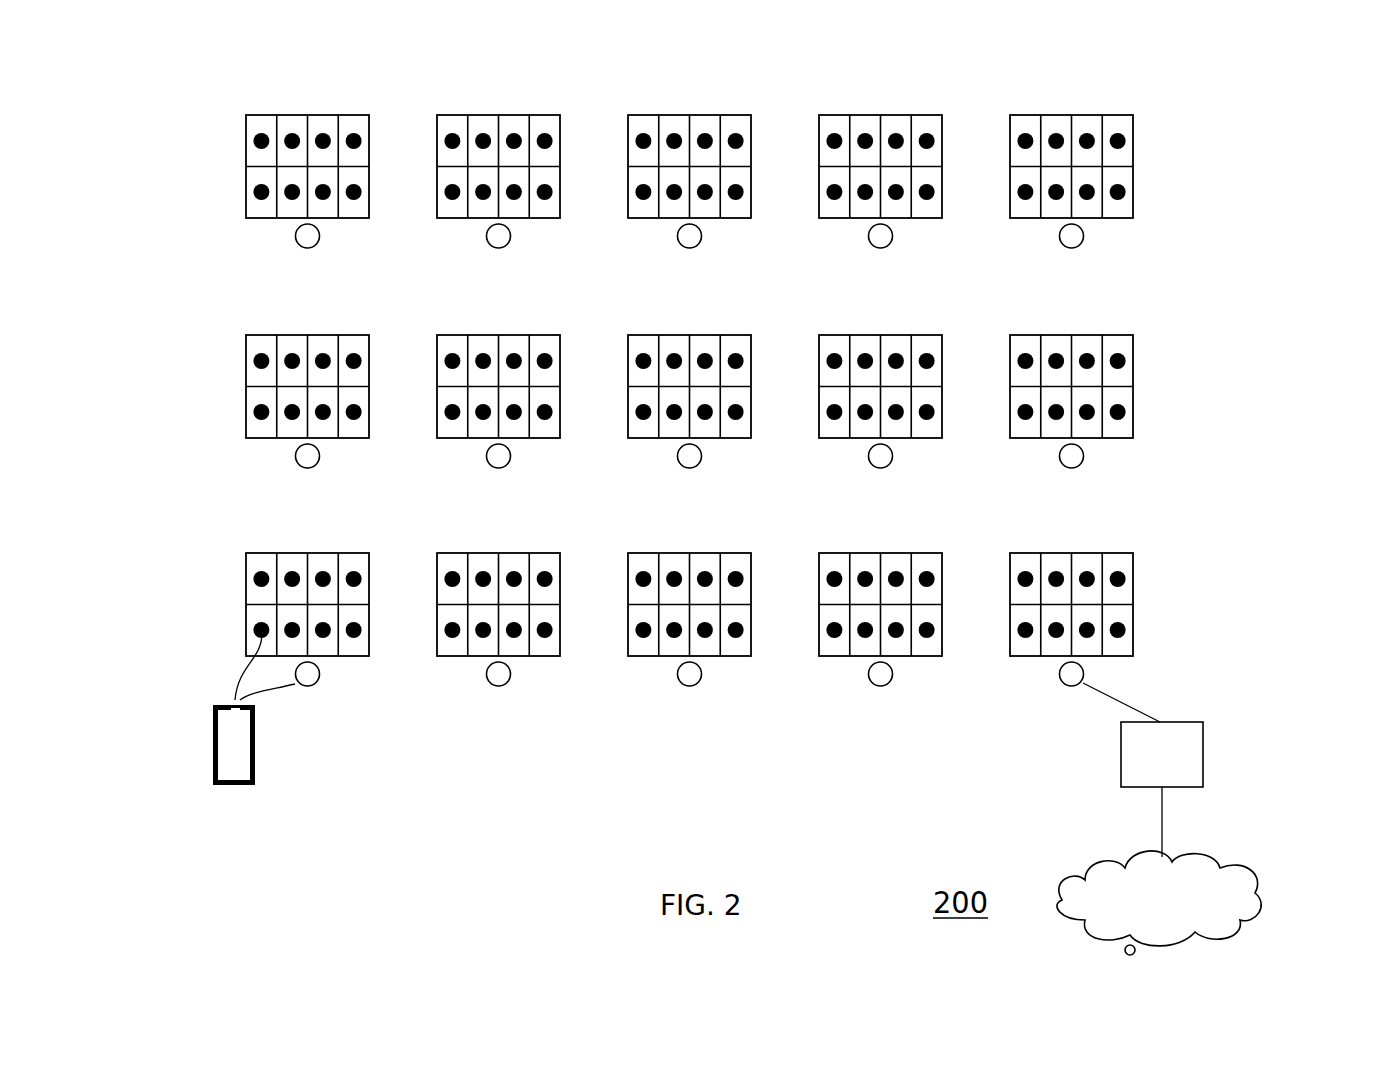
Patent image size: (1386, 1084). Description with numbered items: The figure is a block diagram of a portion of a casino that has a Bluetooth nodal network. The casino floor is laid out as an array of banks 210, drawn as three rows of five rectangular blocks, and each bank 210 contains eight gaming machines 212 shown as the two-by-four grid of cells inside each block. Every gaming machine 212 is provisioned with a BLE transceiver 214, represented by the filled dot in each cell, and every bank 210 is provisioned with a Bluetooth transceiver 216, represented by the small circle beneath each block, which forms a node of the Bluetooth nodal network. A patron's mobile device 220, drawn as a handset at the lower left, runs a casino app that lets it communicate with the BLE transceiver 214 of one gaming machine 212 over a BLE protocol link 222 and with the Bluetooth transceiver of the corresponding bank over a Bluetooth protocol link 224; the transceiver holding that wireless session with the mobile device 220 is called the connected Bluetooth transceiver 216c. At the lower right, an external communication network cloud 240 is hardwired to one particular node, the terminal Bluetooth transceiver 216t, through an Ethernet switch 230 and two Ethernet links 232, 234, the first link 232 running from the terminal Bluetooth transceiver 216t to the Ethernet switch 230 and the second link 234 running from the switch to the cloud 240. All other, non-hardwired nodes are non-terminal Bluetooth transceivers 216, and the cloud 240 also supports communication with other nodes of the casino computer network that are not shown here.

The bank 210 is at (290, 115).
The gaming machine 212 is at (258, 336).
The BLE transceiver 214 is at (261, 357).
The Bluetooth transceiver 216 is at (317, 247).
The connected Bluetooth transceiver 216c is at (320, 680).
The terminal Bluetooth transceiver 216t is at (1065, 685).
The mobile device 220 is at (233, 786).
The BLE protocol link 222 is at (228, 663).
The Bluetooth protocol link 224 is at (282, 695).
The Ethernet switch 230 is at (1203, 735).
The Ethernet link 232 is at (1123, 702).
The Ethernet link 234 is at (1163, 830).
The communication network cloud 240 is at (1240, 857).